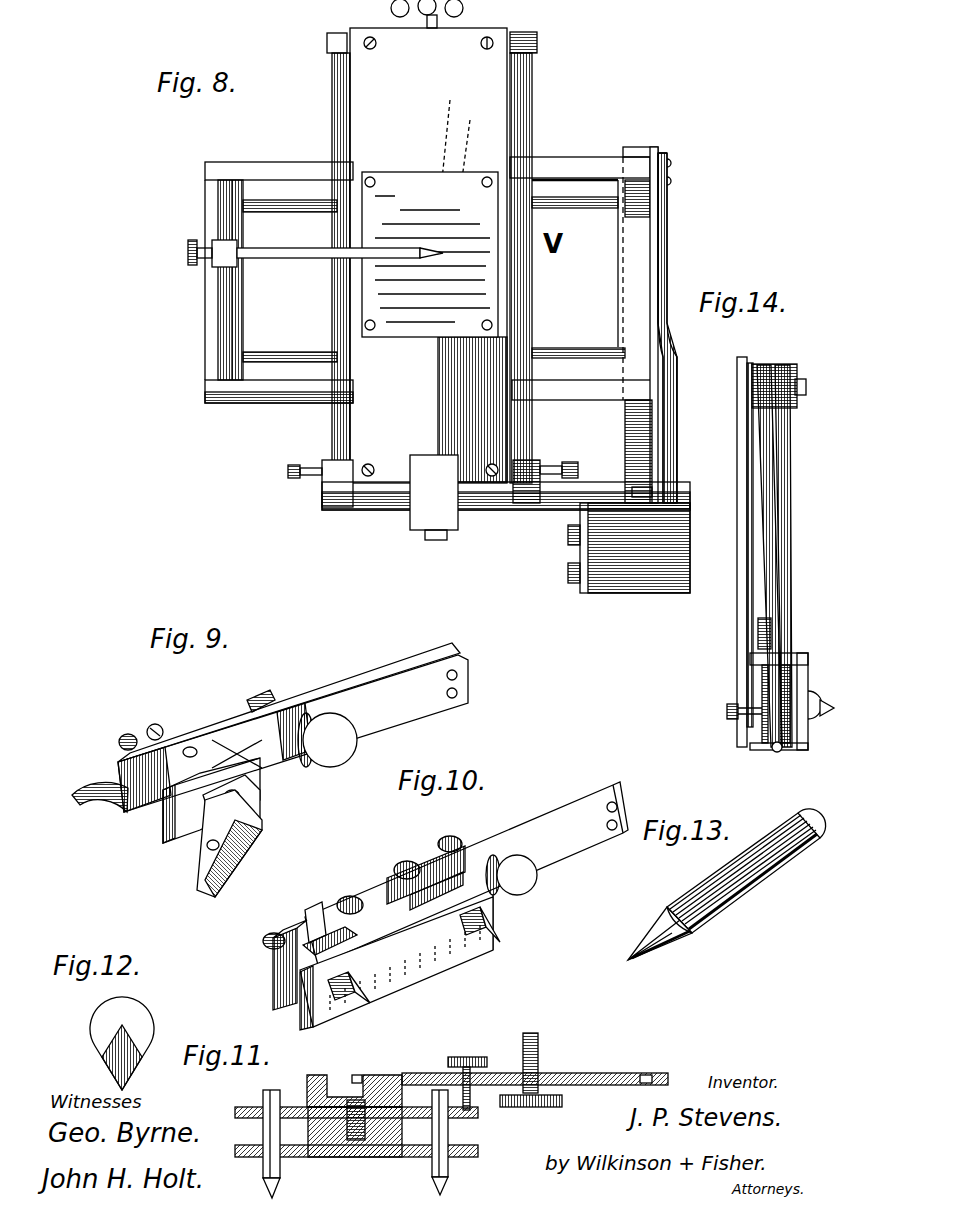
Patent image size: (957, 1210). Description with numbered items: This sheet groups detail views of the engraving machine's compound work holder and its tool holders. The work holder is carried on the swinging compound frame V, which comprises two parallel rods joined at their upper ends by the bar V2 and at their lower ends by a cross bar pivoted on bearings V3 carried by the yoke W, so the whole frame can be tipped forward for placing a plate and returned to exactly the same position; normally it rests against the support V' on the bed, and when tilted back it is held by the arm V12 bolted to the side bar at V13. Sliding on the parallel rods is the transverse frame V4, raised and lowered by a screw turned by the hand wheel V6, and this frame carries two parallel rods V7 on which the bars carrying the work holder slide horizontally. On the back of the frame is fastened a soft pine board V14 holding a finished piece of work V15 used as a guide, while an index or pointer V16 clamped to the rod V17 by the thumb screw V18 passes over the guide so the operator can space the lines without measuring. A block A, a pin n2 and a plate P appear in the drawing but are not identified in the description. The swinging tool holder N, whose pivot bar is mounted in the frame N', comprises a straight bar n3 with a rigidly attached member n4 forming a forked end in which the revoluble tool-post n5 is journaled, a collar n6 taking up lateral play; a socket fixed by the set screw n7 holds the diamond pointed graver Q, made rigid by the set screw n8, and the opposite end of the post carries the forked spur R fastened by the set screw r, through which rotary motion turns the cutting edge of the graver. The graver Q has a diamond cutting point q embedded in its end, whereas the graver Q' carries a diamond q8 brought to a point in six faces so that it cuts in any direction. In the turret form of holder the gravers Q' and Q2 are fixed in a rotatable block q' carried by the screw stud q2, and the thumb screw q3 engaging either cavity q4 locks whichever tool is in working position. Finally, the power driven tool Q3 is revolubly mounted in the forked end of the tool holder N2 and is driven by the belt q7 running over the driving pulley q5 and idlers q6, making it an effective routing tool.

In FIG. 8, the swinging compound frame V is at (432, 258).
In FIG. 8, the support V' is at (514, 344).
In FIG. 8, the upper bar V2 is at (535, 43).
In FIG. 8, the bearings V3 is at (308, 465).
In FIG. 8, the transverse frame V4 is at (287, 168).
In FIG. 8, the hand wheel V6 is at (455, 14).
In FIG. 8, the parallel rods V7 is at (297, 207).
In FIG. 8, the arm V12 is at (443, 510).
In FIG. 8, the bolt V13 is at (433, 540).
In FIG. 8, the soft pine board V14 is at (493, 88).
In FIG. 8, the guide V15 is at (418, 327).
In FIG. 8, the index or pointer V16 is at (308, 250).
In FIG. 8, the rod V17 is at (222, 315).
In FIG. 8, the thumb screw V18 is at (190, 257).
In FIG. 8, the yoke W is at (393, 507).
In FIG. 8, the base block A is at (630, 577).
In FIG. 9, the swinging tool holder N is at (293, 727).
In FIG. 10, the frame N' is at (466, 873).
In FIG. 14, the tool holder N2 is at (755, 623).
In FIG. 9, the pin n2 is at (250, 693).
In FIG. 9, the straight bar n3 is at (342, 734).
In FIG. 9, the member n4 is at (253, 777).
In FIG. 9, the revoluble tool-post n5 is at (122, 738).
In FIG. 9, the collar n6 is at (187, 745).
In FIG. 9, the set screw n7 is at (203, 797).
In FIG. 9, the set screw n8 is at (207, 850).
In FIG. 9, the set screw r is at (158, 727).
In FIG. 9, the forked spur R is at (93, 805).
In FIG. 9, the graver Q is at (248, 803).
In FIG. 12, the graver Q is at (136, 1040).
In FIG. 10, the graver Q' is at (261, 965).
In FIG. 13, the graver Q' is at (746, 872).
In FIG. 11, the graver Q' is at (291, 1144).
In FIG. 10, the graver Q2 is at (490, 923).
In FIG. 11, the graver Q2 is at (450, 1172).
In FIG. 14, the power driven tool Q3 is at (828, 697).
In FIG. 9, the plate P is at (253, 840).
In FIG. 12, the diamond cutting point q is at (131, 1057).
In FIG. 10, the rotatable block q' is at (396, 963).
In FIG. 11, the rotatable block q' is at (487, 1132).
In FIG. 11, the screw stud q2 is at (357, 1110).
In FIG. 11, the thumb screw q3 is at (470, 1057).
In FIG. 11, the cavities q4 is at (245, 1107).
In FIG. 14, the driving pulley q5 is at (770, 751).
In FIG. 14, the idlers q6 is at (770, 365).
In FIG. 14, the belt q7 is at (786, 478).
In FIG. 13, the diamond q8 is at (640, 952).